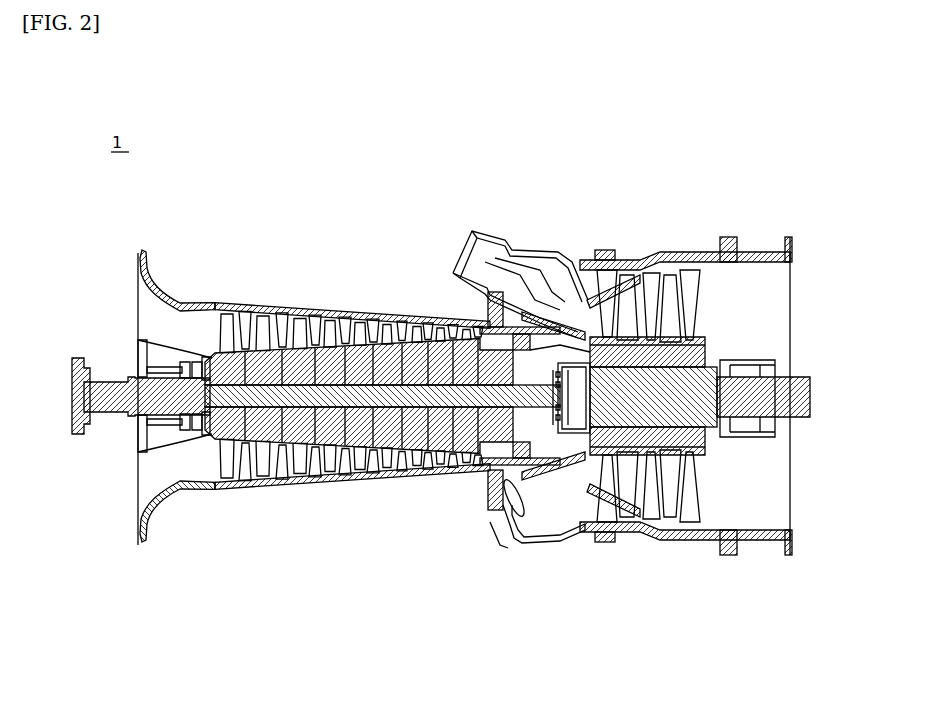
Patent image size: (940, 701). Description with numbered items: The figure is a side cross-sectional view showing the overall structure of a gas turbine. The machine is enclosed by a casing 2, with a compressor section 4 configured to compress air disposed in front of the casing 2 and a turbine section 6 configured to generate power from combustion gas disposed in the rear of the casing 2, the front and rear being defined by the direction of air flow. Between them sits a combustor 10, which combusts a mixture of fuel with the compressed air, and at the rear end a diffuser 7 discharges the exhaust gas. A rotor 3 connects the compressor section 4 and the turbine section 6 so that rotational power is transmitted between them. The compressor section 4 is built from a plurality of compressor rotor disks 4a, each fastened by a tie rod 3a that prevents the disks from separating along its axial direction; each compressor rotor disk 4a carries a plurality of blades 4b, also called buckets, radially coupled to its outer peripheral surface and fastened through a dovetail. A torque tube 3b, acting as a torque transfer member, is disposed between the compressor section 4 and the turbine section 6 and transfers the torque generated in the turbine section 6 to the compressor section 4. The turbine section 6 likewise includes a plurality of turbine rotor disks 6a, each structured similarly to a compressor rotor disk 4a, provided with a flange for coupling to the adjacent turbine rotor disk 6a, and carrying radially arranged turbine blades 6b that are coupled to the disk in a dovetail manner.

The casing 2 is at (178, 300).
The rotor 3 is at (58, 362).
The tie rod 3a is at (217, 436).
The torque tube 3b is at (520, 490).
The compressor section 4 is at (257, 290).
The compressor rotor disk 4a is at (245, 483).
The blade 4b is at (275, 485).
The turbine section 6 is at (685, 381).
The turbine rotor disk 6a is at (665, 450).
The turbine blade 6b is at (695, 487).
The diffuser 7 is at (798, 262).
The combustor 10 is at (492, 228).